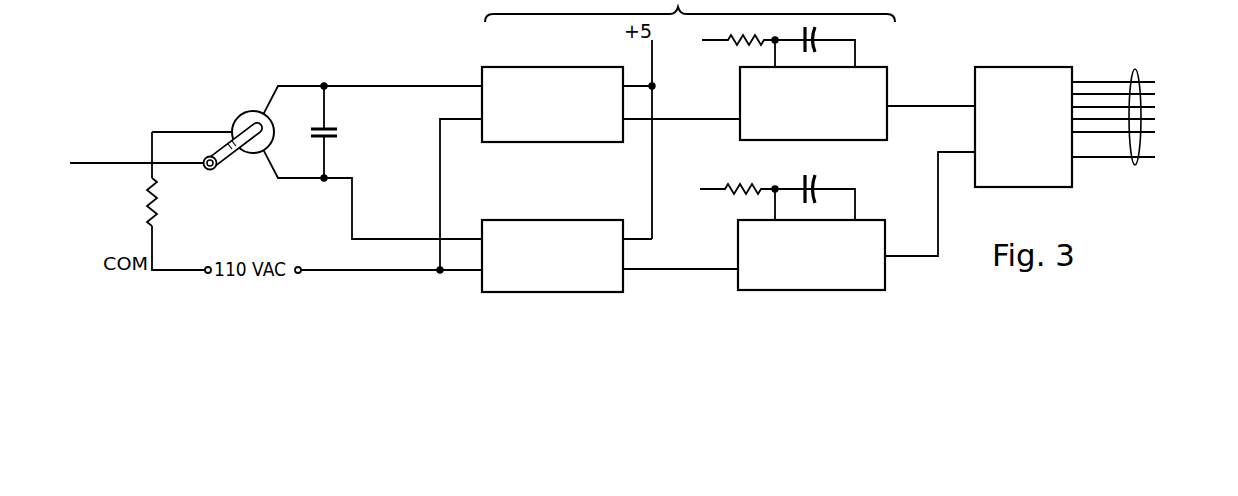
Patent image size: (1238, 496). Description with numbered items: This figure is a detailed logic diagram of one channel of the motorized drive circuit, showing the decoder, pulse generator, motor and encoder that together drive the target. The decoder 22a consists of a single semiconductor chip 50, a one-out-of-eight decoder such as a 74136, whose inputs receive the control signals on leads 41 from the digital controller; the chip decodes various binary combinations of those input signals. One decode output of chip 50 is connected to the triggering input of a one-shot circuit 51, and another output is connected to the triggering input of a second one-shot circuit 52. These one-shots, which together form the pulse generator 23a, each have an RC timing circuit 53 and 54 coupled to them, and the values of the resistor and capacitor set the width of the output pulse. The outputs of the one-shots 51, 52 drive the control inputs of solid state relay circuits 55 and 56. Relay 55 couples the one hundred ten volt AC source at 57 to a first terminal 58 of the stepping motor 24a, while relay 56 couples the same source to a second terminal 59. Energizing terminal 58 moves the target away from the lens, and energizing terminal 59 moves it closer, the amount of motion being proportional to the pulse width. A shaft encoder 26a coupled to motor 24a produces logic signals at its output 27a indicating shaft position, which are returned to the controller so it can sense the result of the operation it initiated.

The address decoder 22a is at (1052, 50).
The pulse generator 23a is at (690, 11).
The stepping motor 24a is at (247, 117).
The shaft encoder 26a is at (217, 170).
The encoder output 27a is at (130, 160).
The leads 41 is at (1137, 73).
The semiconductor chip 50 is at (977, 97).
The one-shot circuit 51 is at (867, 67).
The second one-shot circuit 52 is at (862, 218).
The RC timing circuit 53 is at (772, 42).
The RC timing circuit 54 is at (768, 198).
The solid state relay circuit 55 is at (573, 65).
The solid state relay circuit 56 is at (585, 218).
The 110 volt AC source 57 is at (415, 268).
The first motor terminal 58 is at (293, 83).
The second motor terminal 59 is at (293, 180).